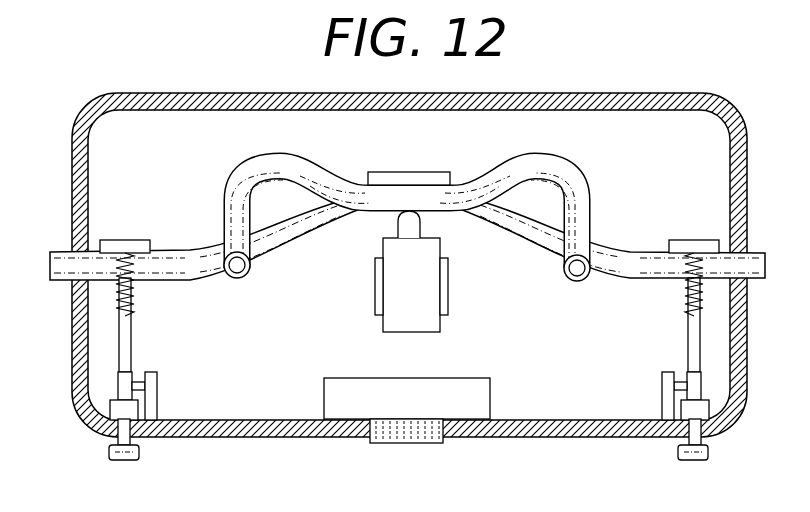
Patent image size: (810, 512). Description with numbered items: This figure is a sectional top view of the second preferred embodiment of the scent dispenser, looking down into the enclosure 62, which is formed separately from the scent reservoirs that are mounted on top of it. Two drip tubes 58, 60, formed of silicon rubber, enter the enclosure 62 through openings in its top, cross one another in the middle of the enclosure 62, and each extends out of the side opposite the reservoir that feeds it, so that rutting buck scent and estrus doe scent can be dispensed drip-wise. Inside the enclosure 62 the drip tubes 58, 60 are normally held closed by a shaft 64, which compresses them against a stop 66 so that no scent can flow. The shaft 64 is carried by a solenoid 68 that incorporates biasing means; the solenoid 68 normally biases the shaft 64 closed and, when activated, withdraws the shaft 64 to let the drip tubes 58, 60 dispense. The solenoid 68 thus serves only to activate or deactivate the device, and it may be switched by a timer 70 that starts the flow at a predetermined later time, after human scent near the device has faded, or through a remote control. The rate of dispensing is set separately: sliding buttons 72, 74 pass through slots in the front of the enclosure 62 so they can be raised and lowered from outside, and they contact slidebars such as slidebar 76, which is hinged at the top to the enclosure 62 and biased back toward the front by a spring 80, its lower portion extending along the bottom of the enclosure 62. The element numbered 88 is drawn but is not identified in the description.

The drip tube 58 is at (643, 252).
The drip tube 60 is at (192, 251).
The enclosure 62 is at (538, 437).
The shaft 64 is at (418, 227).
The stop 66 is at (425, 172).
The solenoid 68 is at (393, 315).
The timer 70 is at (432, 445).
The sliding button 72 is at (108, 455).
The sliding button 74 is at (709, 452).
The slidebar 76 is at (118, 358).
The spring 80 is at (118, 300).
The block 88 is at (123, 240).